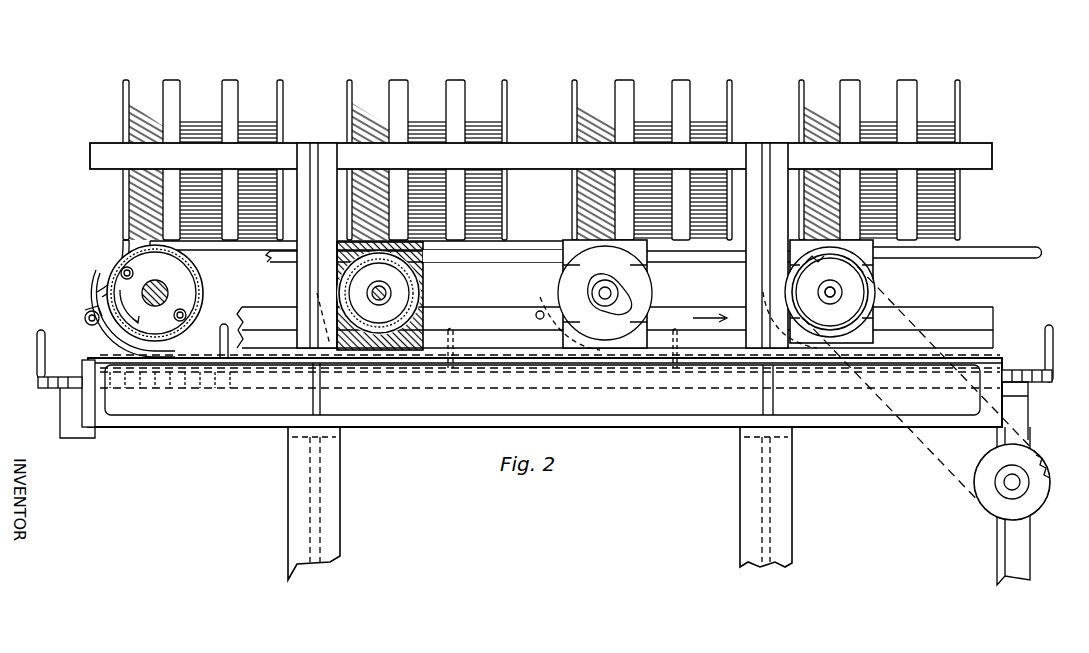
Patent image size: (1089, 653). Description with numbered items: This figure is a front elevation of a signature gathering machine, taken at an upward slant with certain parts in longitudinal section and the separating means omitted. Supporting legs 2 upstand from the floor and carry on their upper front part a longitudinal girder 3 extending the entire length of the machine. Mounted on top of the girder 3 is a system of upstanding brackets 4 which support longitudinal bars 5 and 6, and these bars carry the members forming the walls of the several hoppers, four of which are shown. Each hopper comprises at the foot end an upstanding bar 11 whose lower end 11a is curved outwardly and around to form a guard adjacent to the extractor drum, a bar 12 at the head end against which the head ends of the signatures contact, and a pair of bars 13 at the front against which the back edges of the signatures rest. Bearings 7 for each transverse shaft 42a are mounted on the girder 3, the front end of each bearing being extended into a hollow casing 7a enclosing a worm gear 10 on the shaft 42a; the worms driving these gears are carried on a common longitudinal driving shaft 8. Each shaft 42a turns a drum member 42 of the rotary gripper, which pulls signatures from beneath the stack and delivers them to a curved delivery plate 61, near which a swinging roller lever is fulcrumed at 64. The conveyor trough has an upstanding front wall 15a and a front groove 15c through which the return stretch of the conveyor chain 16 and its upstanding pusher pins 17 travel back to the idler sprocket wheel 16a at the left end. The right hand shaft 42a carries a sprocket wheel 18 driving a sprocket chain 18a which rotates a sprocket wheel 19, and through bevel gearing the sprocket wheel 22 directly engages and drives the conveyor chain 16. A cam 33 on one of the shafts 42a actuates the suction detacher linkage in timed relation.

The supporting legs 2 is at (540, 503).
The longitudinal girder 3 is at (542, 391).
The upstanding brackets 4 is at (542, 245).
The longitudinal bar 5 is at (541, 156).
The longitudinal bar 6 is at (470, 251).
The bearings 7 is at (450, 296).
The hollow casing 7a is at (716, 294).
The longitudinal driving shaft 8 is at (957, 243).
The worm gear 10 is at (379, 293).
The upstanding bar 11 is at (456, 160).
The curved lower end 11a is at (110, 270).
The bar 12 is at (628, 160).
The bars 13 is at (540, 160).
The upstanding wall 15a is at (615, 318).
The front pocket or groove 15c is at (615, 327).
The conveyor chain 16 is at (40, 382).
The idler sprocket wheel 16a is at (55, 392).
The upstanding pins 17 is at (36, 336).
The sprocket wheel 18 is at (830, 292).
The sprocket chain 18a is at (955, 470).
The sprocket wheel 19 is at (1012, 506).
The sprocket wheel 22 is at (1048, 377).
The cam 33 is at (610, 295).
The drum member 42 is at (155, 293).
The transverse shaft 42a is at (168, 290).
The curved delivery plate 61 is at (118, 340).
The fulcrum 64 is at (84, 316).